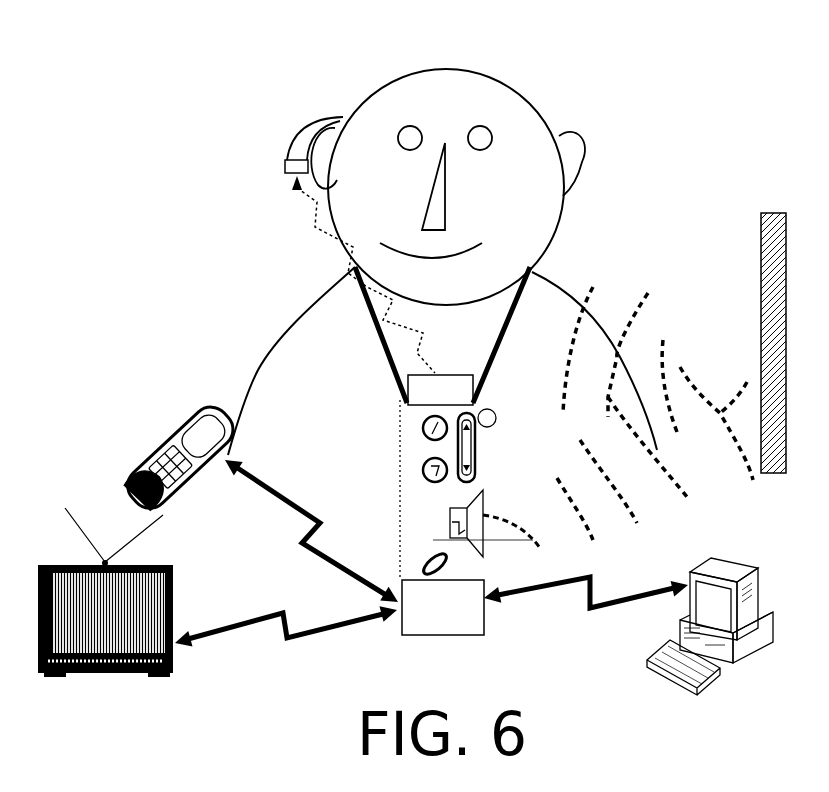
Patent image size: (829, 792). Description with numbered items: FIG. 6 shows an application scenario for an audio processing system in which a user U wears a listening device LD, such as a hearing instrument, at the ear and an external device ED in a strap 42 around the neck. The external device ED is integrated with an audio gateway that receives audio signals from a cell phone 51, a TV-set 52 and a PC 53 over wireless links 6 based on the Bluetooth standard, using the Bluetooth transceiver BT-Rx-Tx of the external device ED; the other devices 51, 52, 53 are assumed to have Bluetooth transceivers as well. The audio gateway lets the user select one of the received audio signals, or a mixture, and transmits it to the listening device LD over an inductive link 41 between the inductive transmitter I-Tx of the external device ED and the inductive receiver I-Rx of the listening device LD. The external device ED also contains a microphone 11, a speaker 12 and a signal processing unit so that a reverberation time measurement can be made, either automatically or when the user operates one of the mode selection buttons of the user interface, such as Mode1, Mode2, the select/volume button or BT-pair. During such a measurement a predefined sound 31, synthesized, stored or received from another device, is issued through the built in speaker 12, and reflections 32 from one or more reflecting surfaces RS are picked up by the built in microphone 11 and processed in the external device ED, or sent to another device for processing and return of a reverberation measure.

The wireless links 6 is at (318, 560).
The built in microphone 11 is at (493, 408).
The built in speaker 12 is at (450, 520).
The predefined sound 31 is at (617, 492).
The reflections 32 is at (633, 317).
The inductive link 41 is at (317, 227).
The strap 42 is at (532, 292).
The cell phone 51 is at (160, 433).
The TV-set 52 is at (186, 581).
The PC 53 is at (688, 556).
The user U is at (520, 90).
The listening device LD is at (297, 137).
The inductive receiver I-Rx is at (285, 171).
The inductive transmitter I-Tx is at (440, 390).
The external device ED is at (385, 501).
The reflecting surface RS is at (765, 262).
The mode selection button Mode1 is at (420, 425).
The mode selection button Mode2 is at (423, 470).
The mode selection button BT-pair is at (425, 558).
The Bluetooth transceiver BT-Rx-Tx is at (443, 607).